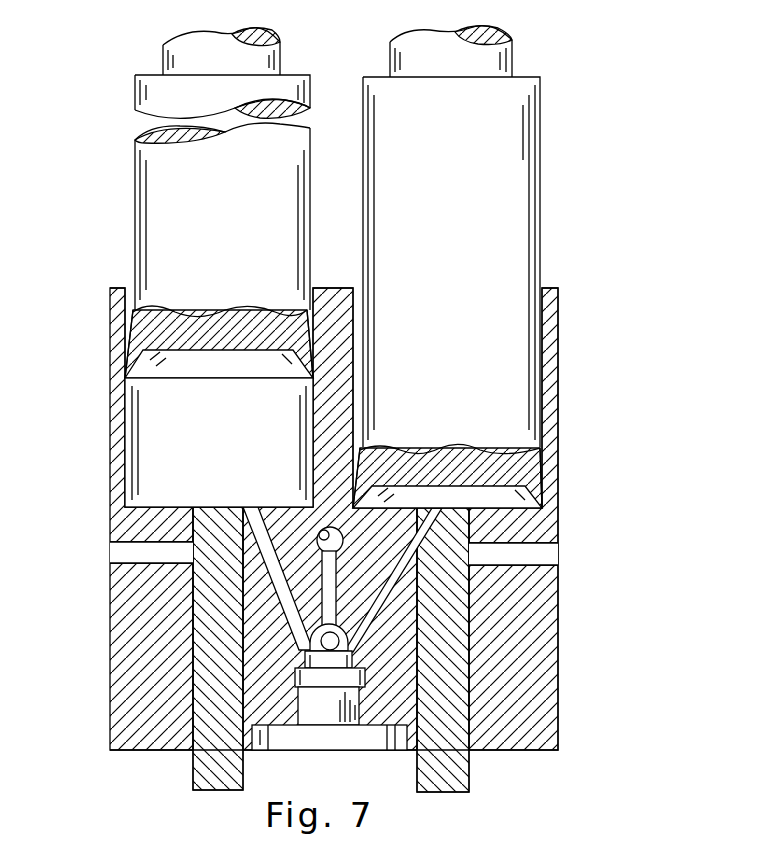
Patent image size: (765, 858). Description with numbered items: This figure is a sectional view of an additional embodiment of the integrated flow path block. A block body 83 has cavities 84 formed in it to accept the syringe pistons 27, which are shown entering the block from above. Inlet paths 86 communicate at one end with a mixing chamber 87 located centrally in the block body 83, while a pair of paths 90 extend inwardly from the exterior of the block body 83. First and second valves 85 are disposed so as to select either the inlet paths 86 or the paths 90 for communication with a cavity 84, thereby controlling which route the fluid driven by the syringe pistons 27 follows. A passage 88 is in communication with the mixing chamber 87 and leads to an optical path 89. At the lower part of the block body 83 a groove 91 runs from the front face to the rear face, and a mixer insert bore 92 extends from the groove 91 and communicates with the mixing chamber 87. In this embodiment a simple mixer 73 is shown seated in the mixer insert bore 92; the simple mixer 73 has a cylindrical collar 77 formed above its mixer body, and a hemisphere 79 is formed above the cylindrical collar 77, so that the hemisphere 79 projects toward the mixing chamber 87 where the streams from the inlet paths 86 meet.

The syringe pistons 27 is at (135, 148).
The simple mixer 73 is at (306, 752).
The cylindrical collar 77 is at (348, 660).
The hemisphere 79 is at (346, 638).
The block body 83 is at (560, 290).
The cavities 84 is at (110, 408).
The first and second valves 85 is at (192, 781).
The inlet paths 86 is at (258, 566).
The mixing chamber 87 is at (334, 634).
The passage 88 is at (322, 568).
The optical path 89 is at (325, 528).
The pair of paths 90 is at (135, 552).
The groove 91 is at (401, 750).
The mixer insert bore 92 is at (352, 700).